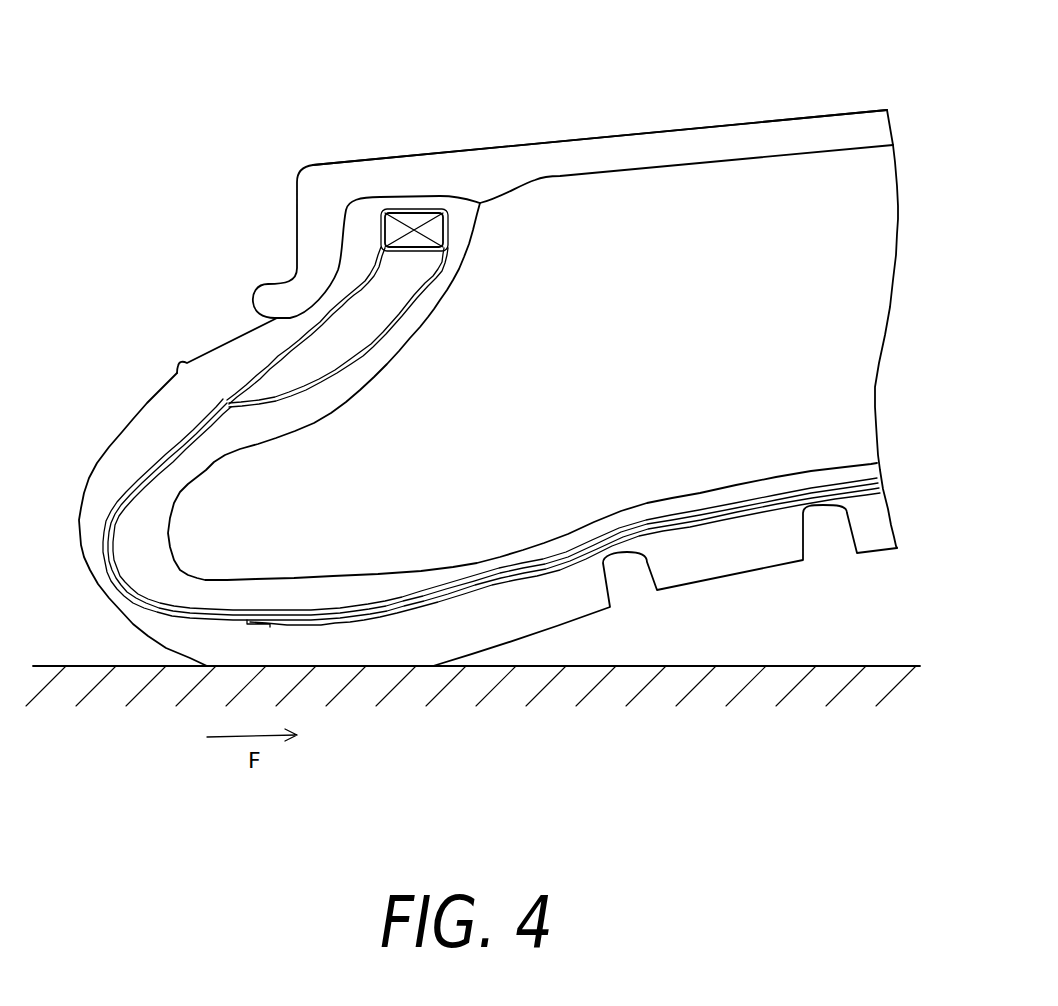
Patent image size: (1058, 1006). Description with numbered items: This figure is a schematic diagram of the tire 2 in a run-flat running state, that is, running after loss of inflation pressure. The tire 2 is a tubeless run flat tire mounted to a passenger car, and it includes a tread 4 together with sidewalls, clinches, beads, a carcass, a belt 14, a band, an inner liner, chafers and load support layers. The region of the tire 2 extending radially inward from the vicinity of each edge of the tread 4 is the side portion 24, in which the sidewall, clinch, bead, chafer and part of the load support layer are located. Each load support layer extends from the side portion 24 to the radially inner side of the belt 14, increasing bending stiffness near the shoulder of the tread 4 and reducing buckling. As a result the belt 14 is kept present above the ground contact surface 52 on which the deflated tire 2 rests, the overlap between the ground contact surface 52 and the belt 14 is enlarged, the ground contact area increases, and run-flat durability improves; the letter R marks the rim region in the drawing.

The tire 2 is at (272, 93).
The tread 4 is at (687, 563).
The belt 14 is at (407, 610).
The side portion 24 is at (180, 347).
The ground contact surface 52 is at (350, 667).
The rim R is at (493, 165).